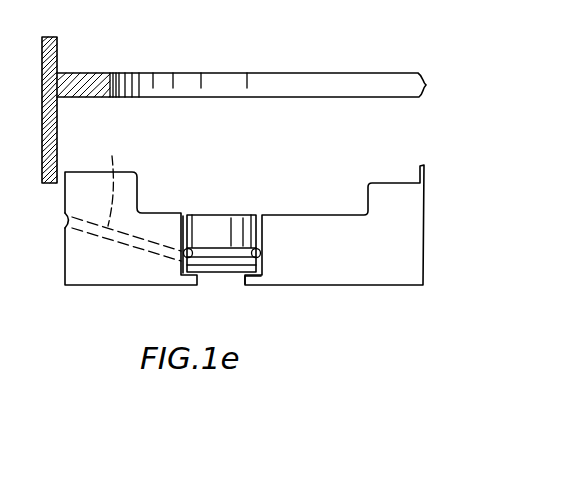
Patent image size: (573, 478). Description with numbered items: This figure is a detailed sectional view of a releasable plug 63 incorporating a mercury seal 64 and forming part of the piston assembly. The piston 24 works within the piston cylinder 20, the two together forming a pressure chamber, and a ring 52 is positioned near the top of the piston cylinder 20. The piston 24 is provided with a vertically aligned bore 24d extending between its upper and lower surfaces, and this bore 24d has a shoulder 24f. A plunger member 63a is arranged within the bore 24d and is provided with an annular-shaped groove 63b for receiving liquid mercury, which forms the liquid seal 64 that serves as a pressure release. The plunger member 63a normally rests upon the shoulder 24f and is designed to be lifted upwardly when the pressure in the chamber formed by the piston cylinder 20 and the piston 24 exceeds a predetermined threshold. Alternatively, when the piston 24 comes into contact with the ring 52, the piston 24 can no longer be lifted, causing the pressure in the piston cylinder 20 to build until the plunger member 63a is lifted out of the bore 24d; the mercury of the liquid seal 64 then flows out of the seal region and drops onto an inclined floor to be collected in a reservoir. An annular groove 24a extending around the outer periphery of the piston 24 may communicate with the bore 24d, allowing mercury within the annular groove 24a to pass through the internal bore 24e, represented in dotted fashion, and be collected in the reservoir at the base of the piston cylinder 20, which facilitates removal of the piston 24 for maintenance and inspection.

The piston cylinder 20 is at (58, 48).
The ring 52 is at (105, 73).
The piston 24 is at (97, 272).
The annular groove 24a is at (65, 226).
The bore 24d is at (186, 213).
The internal bore 24e is at (110, 178).
The shoulder 24f is at (257, 281).
The releasable plug 63 is at (240, 163).
The plunger member 63a is at (213, 223).
The annular-shaped groove 63b is at (232, 257).
The mercury seal 64 is at (259, 250).